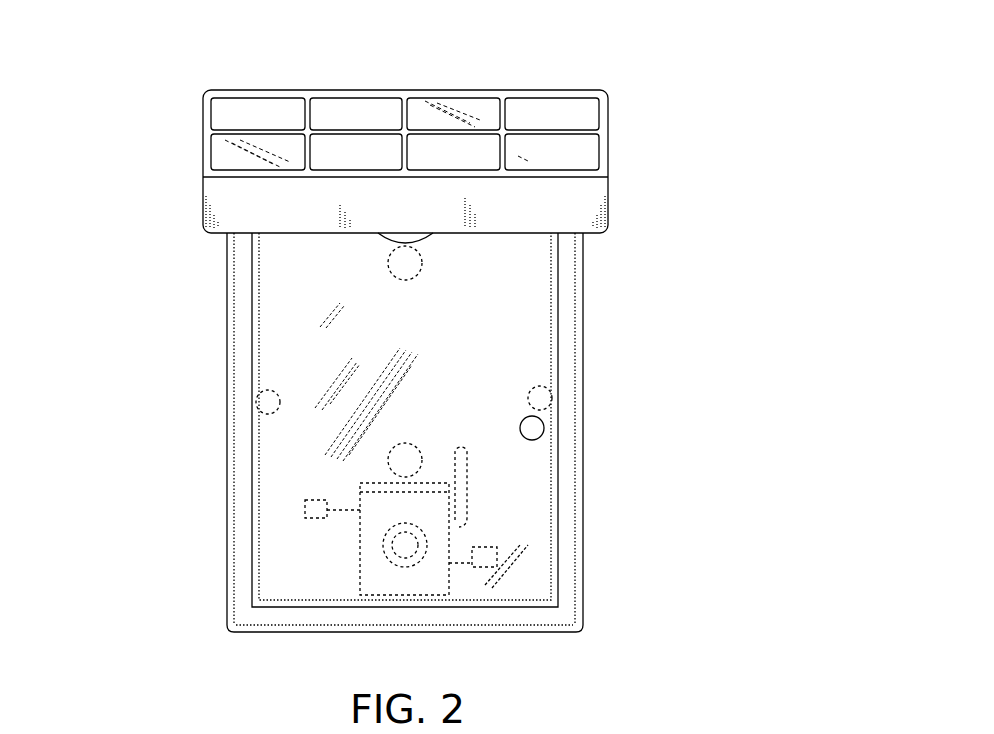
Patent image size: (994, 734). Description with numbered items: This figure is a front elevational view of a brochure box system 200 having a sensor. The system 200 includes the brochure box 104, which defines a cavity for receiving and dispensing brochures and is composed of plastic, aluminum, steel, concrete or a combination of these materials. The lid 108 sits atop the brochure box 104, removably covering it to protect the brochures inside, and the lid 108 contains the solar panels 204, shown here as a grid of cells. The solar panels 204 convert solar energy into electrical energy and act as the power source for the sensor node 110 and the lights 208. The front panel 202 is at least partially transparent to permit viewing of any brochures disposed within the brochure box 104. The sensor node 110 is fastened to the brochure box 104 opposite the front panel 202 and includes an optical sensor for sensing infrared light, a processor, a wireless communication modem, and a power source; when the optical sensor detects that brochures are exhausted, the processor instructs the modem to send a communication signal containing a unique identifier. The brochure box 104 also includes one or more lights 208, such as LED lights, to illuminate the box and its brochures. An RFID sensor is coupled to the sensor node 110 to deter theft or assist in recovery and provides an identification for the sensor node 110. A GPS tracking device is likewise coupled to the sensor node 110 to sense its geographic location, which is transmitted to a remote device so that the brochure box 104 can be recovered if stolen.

The system 200 is at (704, 40).
The lid 108 is at (230, 90).
The solar panels 204 is at (569, 117).
The brochure box 104 is at (583, 373).
The front panel 202 is at (280, 558).
The lights 208 is at (273, 392).
The sensor node 110 is at (372, 558).
The RFID sensor RFID is at (305, 510).
The GPS tracking device GPS is at (482, 558).